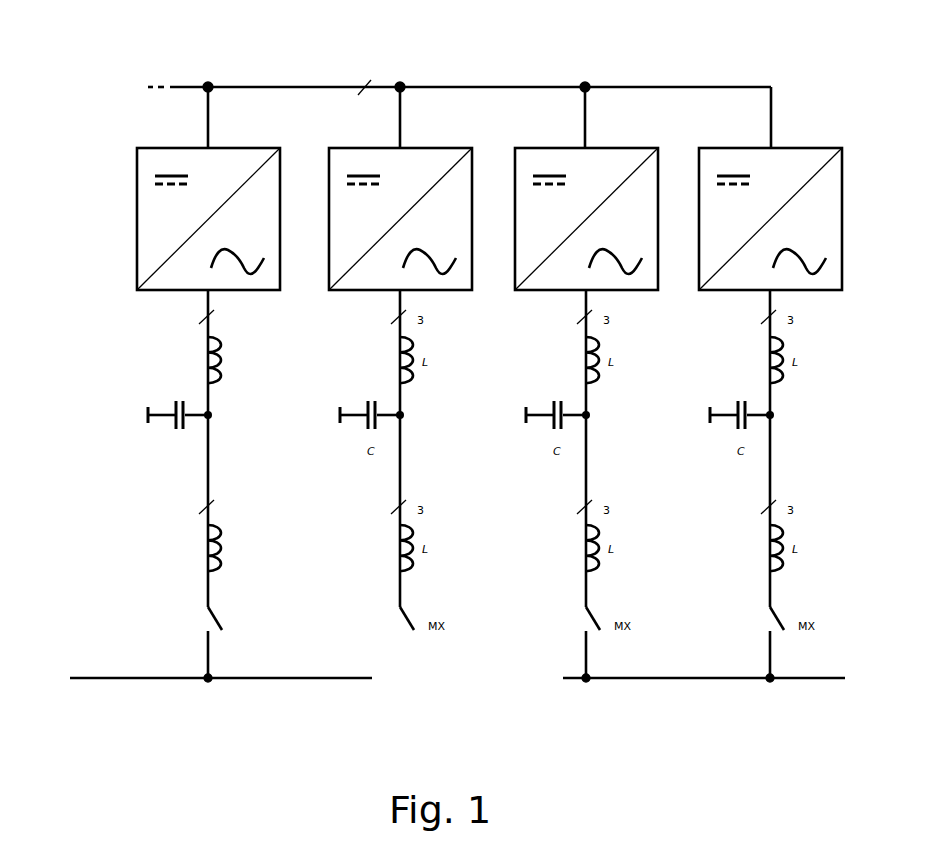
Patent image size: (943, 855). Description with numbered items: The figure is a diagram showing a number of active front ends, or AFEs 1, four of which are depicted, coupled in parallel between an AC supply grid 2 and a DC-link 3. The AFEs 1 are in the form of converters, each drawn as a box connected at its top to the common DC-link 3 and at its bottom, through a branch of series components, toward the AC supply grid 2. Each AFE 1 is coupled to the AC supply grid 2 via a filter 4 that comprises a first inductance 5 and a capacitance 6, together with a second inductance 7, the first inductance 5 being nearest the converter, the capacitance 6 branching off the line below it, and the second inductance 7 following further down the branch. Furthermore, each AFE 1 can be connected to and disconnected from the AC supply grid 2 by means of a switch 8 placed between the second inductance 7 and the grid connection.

The AFE 1 is at (157, 216).
The AC supply grid 2 is at (355, 680).
The DC-link 3 is at (532, 83).
The filter 4 is at (129, 441).
The first inductance 5 is at (198, 357).
The capacitance 6 is at (155, 402).
The second inductance 7 is at (190, 548).
The switch 8 is at (193, 615).